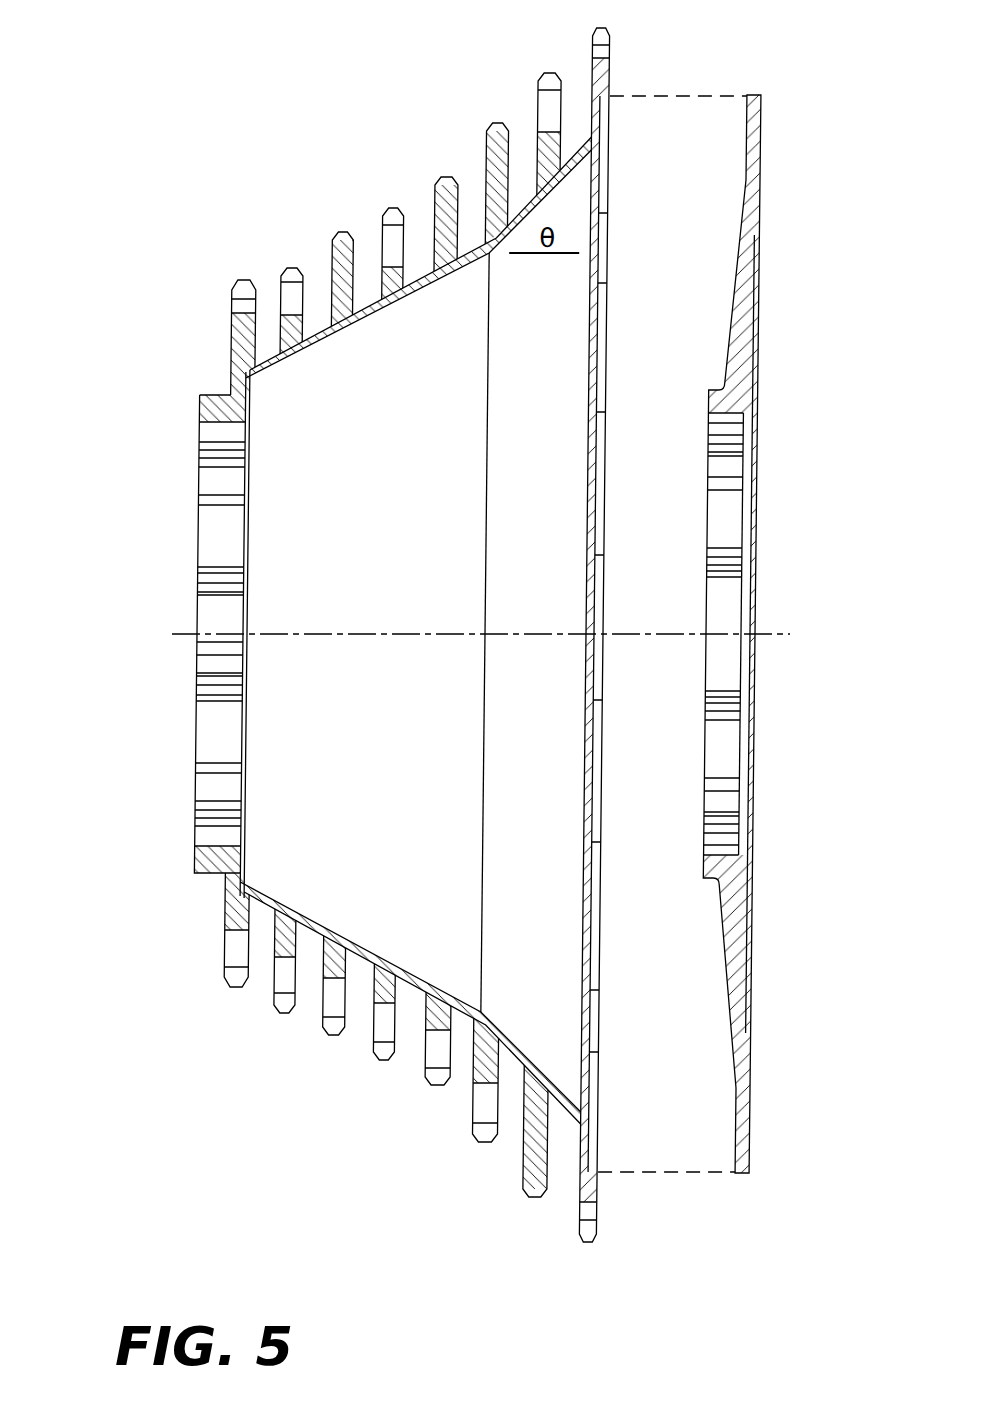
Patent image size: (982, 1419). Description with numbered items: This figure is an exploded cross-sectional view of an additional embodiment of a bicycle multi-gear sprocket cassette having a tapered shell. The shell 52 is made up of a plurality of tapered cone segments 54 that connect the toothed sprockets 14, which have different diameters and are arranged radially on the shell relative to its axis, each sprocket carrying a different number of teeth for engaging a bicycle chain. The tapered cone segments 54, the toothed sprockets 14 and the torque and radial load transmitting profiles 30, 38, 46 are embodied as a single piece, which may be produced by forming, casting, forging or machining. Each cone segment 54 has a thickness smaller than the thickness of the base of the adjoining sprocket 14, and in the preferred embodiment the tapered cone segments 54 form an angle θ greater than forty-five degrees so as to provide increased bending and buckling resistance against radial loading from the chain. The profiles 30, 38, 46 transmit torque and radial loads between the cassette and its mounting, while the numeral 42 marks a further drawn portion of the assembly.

The toothed sprockets 14 is at (380, 240).
The torque and radial load transmitting profile 30 is at (203, 458).
The torque and radial load transmitting profile 38 is at (608, 192).
The outlet tube boss 42 is at (738, 358).
The torque and radial load transmitting profile 46 is at (732, 483).
The shell 52 is at (322, 938).
The tapered cone segments 54 is at (470, 1015).